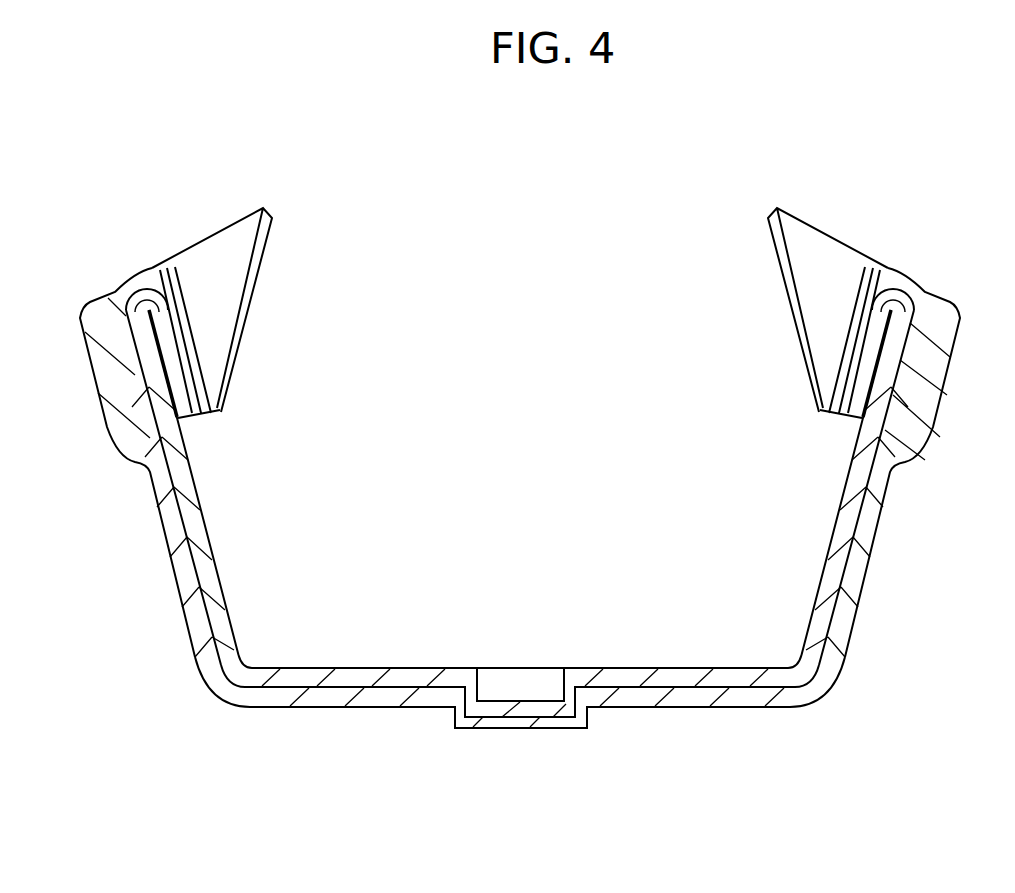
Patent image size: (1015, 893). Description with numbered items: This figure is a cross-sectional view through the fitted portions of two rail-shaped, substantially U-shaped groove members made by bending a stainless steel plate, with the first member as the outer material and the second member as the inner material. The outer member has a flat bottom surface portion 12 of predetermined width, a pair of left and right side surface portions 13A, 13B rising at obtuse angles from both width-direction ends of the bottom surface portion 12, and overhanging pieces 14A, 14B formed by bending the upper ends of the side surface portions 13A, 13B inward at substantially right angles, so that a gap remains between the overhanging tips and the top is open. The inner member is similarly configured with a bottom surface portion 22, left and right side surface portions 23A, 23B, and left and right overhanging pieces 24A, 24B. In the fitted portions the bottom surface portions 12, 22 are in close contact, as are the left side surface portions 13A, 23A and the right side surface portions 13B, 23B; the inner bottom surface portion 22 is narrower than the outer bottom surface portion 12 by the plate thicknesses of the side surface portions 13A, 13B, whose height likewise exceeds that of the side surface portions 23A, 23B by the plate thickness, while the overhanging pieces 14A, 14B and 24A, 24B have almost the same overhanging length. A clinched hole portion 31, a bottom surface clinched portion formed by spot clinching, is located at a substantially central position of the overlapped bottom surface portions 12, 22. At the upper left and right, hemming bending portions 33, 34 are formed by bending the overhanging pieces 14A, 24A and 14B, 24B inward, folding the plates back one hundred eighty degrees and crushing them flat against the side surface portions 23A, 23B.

The bottom surface portion 12 is at (337, 706).
The side surface portion 13A is at (167, 525).
The side surface portion 13B is at (872, 527).
The overhanging piece 14A is at (197, 347).
The overhanging piece 14B is at (840, 360).
The bottom surface portion 22 is at (368, 672).
The side surface portion 23A is at (203, 517).
The side surface portion 23B is at (840, 538).
The overhanging piece 24A is at (188, 418).
The overhanging piece 24B is at (857, 412).
The clinched hole portion 31 is at (562, 686).
The hemming bending portion 33 is at (192, 263).
The hemming bending portion 34 is at (835, 257).